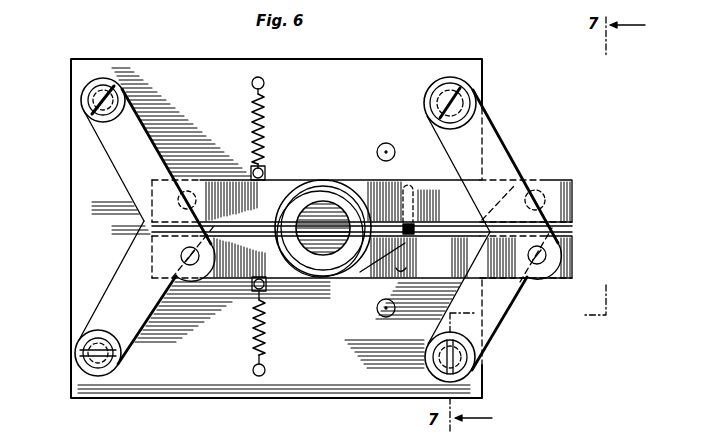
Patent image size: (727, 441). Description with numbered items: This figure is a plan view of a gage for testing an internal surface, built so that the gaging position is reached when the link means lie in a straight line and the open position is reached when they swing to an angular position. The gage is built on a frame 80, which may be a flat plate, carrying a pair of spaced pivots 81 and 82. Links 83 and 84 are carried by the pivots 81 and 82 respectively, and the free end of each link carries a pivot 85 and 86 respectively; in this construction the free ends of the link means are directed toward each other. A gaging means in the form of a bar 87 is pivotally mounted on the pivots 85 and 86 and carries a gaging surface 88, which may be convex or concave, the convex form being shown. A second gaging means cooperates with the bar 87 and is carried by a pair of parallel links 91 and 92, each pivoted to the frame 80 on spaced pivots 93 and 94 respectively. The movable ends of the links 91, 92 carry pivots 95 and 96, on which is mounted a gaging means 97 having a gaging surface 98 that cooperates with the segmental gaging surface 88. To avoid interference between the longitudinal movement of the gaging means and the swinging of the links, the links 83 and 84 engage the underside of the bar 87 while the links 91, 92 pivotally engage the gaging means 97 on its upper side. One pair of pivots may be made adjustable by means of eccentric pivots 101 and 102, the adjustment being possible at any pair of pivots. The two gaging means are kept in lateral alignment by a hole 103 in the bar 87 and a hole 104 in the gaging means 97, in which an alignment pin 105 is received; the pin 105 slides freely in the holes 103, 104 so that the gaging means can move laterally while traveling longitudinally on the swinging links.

The frame 80 is at (151, 390).
The pivot 81 is at (86, 360).
The pivot 82 is at (478, 362).
The link 83 is at (100, 300).
The link 84 is at (498, 306).
The pivot 85 is at (194, 190).
The pivot 86 is at (547, 200).
The bar 87 is at (284, 180).
The gaging surface 88 is at (323, 228).
The link 91 is at (107, 140).
The link 92 is at (498, 146).
The pivot 93 is at (108, 82).
The pivot 94 is at (462, 105).
The pivot 95 is at (181, 255).
The pivot 96 is at (546, 257).
The gaging means 97 is at (291, 278).
The gaging surface 98 is at (362, 229).
The eccentric pivot 101 is at (88, 338).
The eccentric pivot 102 is at (490, 337).
The hole 103 is at (395, 188).
The hole 104 is at (395, 272).
The alignment pin 105 is at (432, 200).